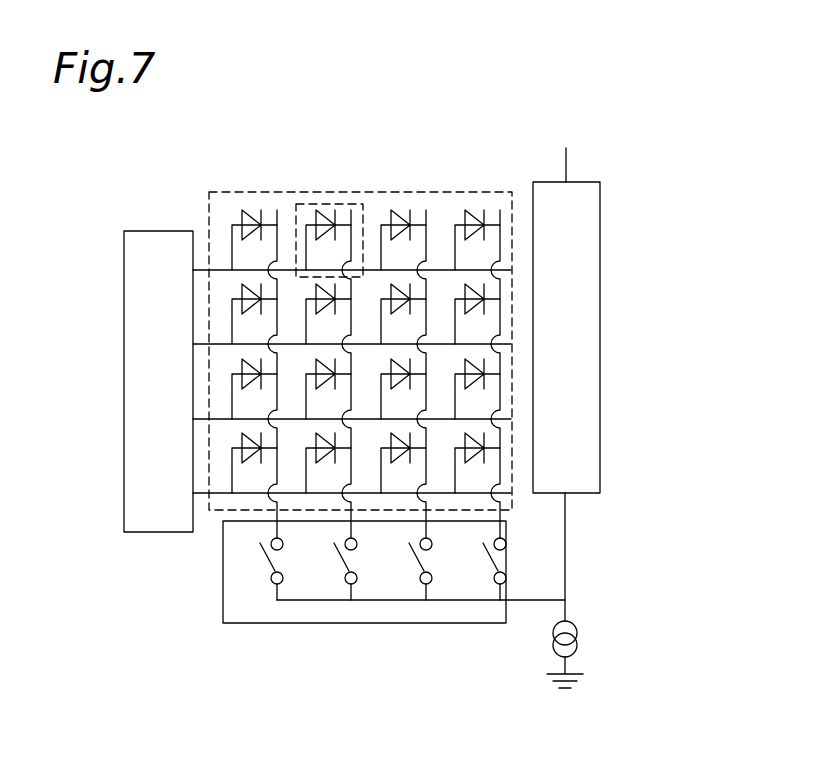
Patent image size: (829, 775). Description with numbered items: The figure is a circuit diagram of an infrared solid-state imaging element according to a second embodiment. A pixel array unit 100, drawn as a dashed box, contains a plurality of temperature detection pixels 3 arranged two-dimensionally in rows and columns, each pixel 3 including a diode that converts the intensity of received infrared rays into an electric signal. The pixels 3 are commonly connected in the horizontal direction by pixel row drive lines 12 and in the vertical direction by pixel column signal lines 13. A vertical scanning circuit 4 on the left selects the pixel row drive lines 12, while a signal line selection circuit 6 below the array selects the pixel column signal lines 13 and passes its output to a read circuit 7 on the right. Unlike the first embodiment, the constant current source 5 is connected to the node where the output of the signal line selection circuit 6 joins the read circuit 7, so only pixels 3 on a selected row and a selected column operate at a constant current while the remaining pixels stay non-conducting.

The temperature detection pixel 3 is at (313, 204).
The vertical scanning circuit 4 is at (160, 231).
The constant current source 5 is at (576, 633).
The signal line selection circuit 6 is at (223, 612).
The read circuit 7 is at (600, 372).
The pixel row drive line 12 is at (220, 270).
The pixel column signal line 13 is at (500, 220).
The pixel array unit 100 is at (368, 192).